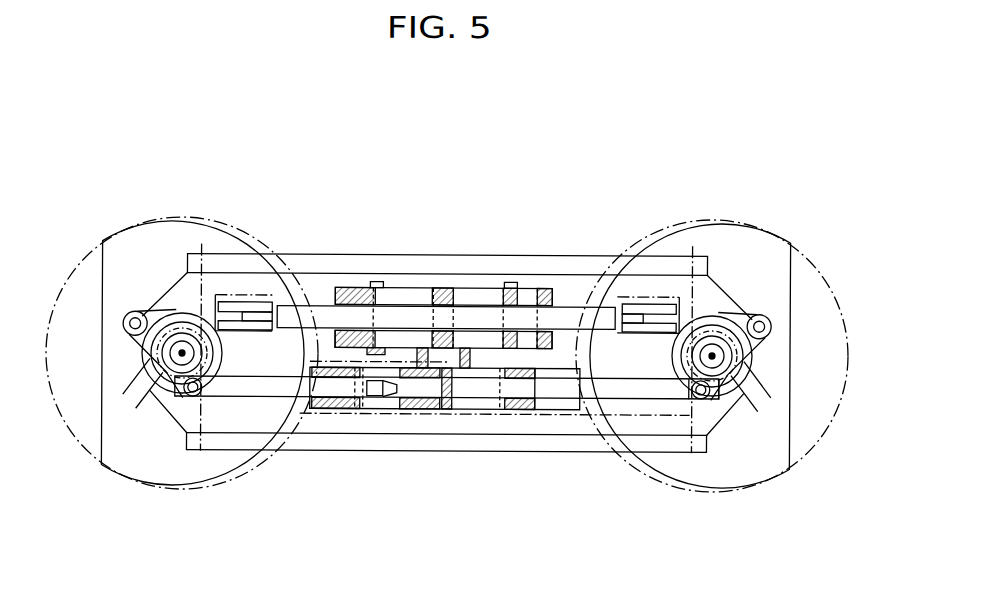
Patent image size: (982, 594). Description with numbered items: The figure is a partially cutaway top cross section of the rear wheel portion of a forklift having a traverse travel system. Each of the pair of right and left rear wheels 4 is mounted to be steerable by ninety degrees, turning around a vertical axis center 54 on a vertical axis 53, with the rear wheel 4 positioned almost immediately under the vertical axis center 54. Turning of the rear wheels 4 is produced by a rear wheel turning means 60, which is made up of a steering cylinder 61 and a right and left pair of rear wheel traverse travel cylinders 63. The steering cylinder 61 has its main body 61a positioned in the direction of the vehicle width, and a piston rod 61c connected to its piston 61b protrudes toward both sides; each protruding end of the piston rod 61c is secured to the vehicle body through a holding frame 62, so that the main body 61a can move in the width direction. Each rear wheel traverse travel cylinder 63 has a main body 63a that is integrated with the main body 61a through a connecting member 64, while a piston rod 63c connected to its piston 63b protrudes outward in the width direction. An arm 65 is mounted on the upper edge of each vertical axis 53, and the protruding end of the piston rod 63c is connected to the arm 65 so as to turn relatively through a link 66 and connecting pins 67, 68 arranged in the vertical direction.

The rear wheel 4 is at (157, 457).
The vertical axis 53 is at (136, 332).
The vertical axis center 54 is at (165, 370).
The rear wheel turning means 60 is at (642, 283).
The steering cylinder 61 is at (412, 286).
The main body 61a is at (473, 290).
The piston 61b is at (445, 292).
The piston rod 61c is at (568, 320).
The holding frame 62 is at (290, 348).
The rear wheel traverse travel cylinder 63 is at (462, 418).
The main body 63a is at (520, 407).
The piston 63b is at (373, 410).
The piston rod 63c is at (287, 390).
The connecting member 64 is at (450, 407).
The arm 65 is at (162, 330).
The link 66 is at (180, 358).
The connecting pin 67 is at (761, 319).
The connecting pin 68 is at (697, 403).